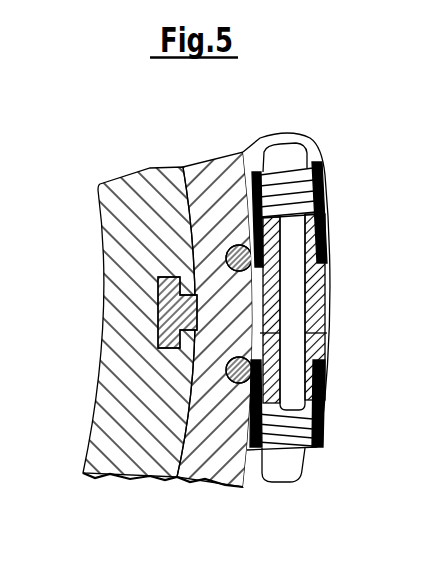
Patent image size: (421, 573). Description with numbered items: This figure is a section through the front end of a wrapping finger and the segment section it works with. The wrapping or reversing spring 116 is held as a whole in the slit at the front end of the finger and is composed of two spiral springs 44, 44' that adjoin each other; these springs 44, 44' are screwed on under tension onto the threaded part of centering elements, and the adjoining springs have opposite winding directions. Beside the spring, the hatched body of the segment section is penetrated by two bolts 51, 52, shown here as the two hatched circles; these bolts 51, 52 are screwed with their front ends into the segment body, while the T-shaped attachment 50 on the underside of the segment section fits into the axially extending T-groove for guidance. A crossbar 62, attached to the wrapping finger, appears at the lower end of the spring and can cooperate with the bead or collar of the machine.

The spring 44 is at (327, 198).
The spring 44' is at (329, 418).
The wrapping or reversing spring 116 is at (330, 258).
The key tongue 50 is at (158, 307).
The bolt 51 is at (227, 258).
The bolt 52 is at (227, 369).
The crossbar 62 is at (283, 470).